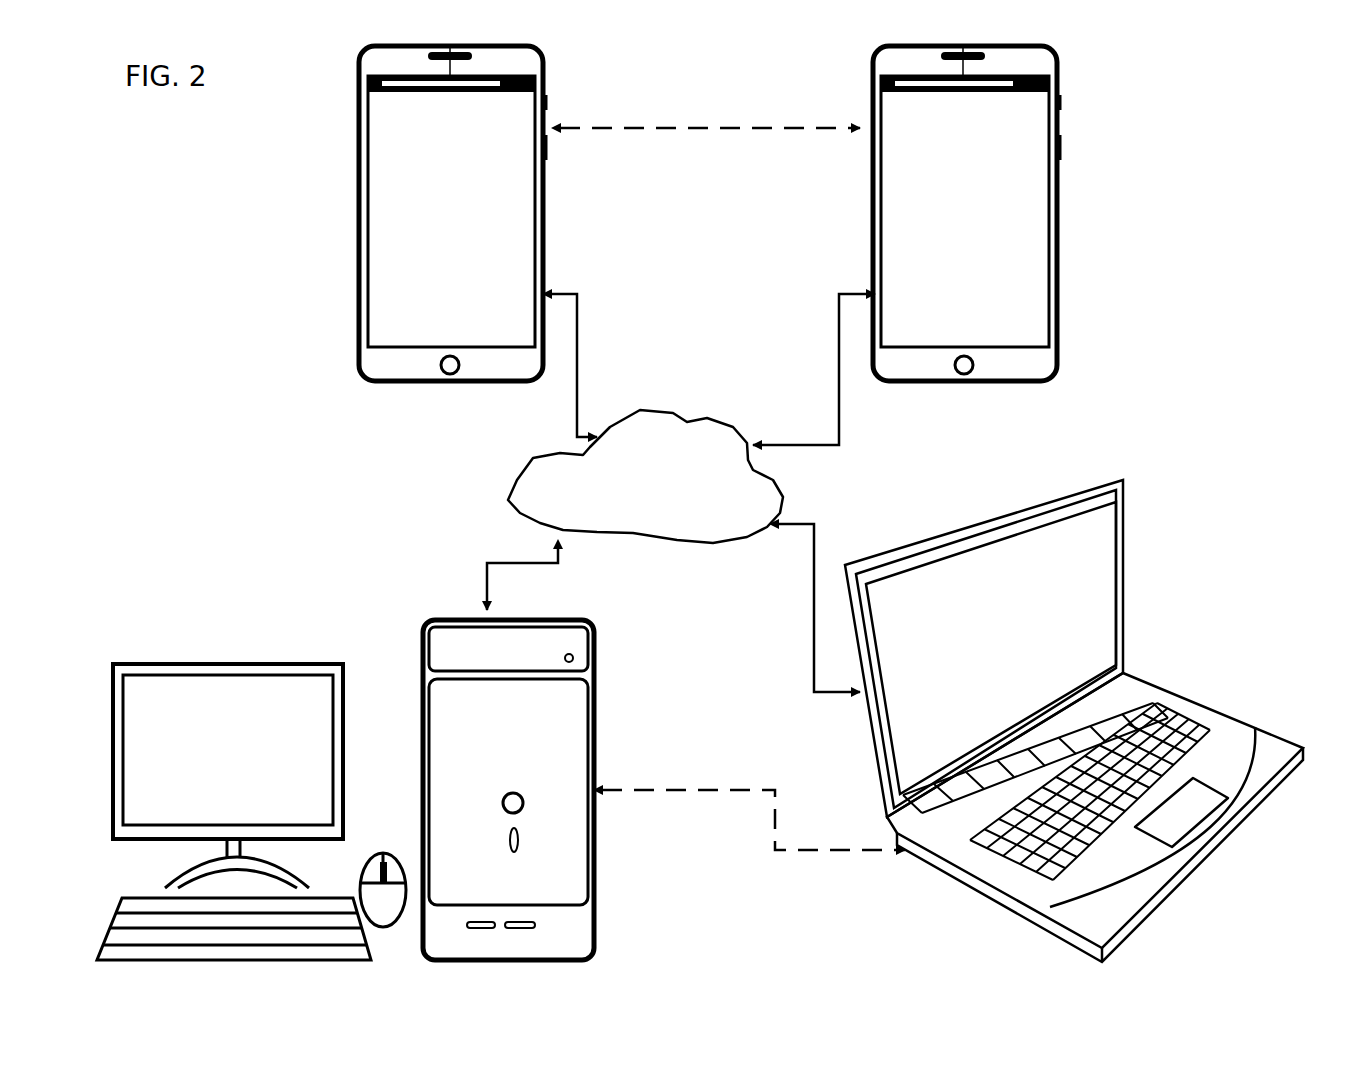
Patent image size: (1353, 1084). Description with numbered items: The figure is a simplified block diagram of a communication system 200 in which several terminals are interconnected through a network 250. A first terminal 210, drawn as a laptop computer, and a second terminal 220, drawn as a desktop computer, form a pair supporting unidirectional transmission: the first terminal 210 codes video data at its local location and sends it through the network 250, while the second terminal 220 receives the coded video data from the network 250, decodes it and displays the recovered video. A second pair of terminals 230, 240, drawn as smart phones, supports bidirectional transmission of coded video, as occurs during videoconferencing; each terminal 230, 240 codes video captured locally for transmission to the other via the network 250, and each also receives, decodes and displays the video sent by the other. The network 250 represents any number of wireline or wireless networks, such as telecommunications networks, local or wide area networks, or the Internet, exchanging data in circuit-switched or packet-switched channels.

The communication system 200 is at (258, 148).
The first terminal 210 is at (1124, 568).
The second terminal 220 is at (594, 914).
The terminal 230 is at (357, 150).
The terminal 240 is at (871, 150).
The network 250 is at (645, 476).